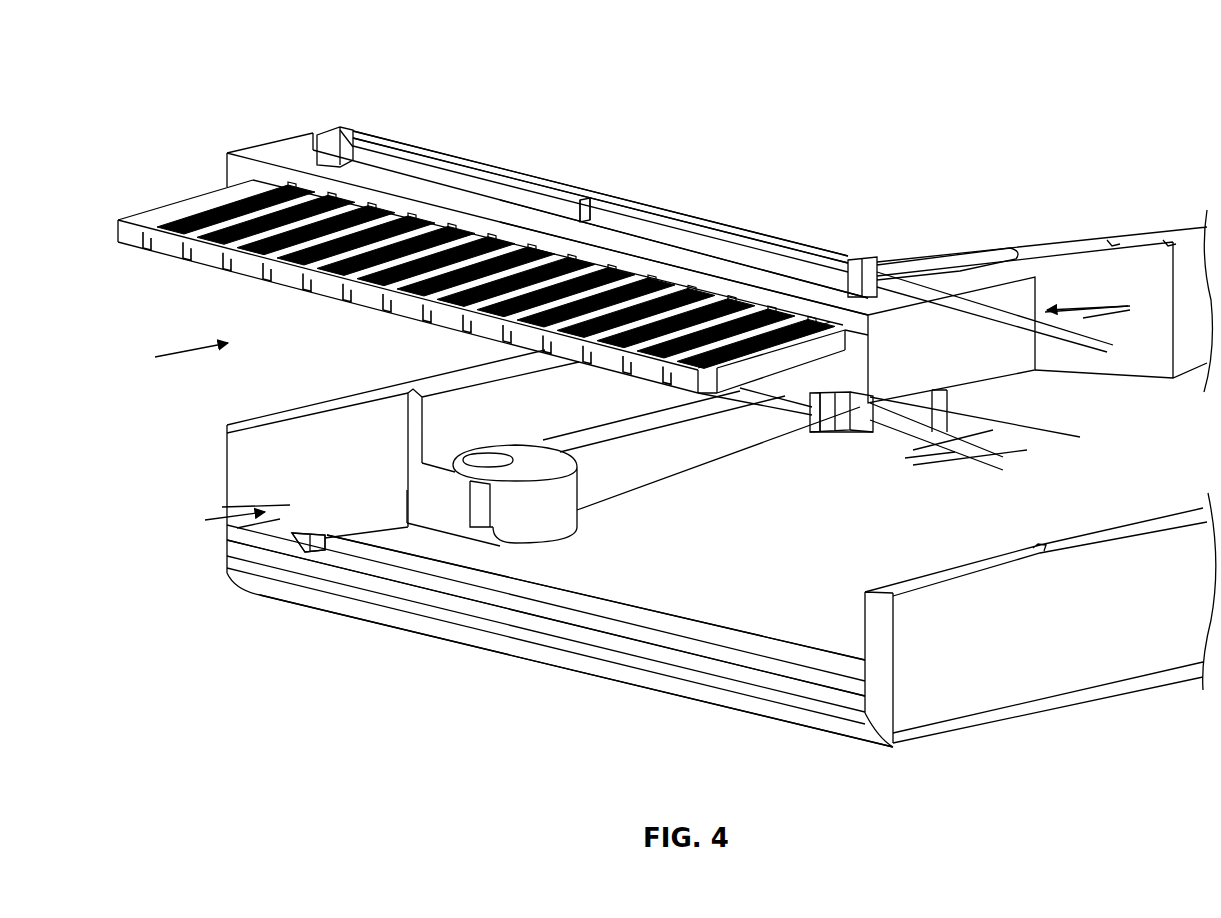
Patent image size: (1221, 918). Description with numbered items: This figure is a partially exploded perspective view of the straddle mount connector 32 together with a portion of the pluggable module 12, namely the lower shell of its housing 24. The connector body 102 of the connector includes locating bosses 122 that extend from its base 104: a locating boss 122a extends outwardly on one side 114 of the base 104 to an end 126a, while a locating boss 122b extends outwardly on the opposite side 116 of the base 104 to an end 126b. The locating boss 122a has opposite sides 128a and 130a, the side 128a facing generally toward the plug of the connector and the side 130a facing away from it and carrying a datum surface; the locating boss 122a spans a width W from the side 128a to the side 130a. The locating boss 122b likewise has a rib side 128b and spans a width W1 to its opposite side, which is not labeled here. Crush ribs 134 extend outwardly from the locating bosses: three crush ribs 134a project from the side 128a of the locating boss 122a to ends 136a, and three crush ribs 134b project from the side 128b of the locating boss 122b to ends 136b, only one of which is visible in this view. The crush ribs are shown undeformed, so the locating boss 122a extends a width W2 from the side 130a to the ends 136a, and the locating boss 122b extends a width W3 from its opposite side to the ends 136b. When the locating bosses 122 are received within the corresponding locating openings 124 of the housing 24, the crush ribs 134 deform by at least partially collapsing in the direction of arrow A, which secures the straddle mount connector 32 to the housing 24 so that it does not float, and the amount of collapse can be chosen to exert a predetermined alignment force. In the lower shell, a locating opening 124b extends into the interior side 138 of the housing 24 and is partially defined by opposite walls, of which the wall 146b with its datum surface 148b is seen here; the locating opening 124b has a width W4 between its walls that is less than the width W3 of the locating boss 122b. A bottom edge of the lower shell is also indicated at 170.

The pluggable module 12 is at (970, 128).
The housing 24 is at (1052, 666).
The straddle mount connector 32 is at (277, 112).
The connector body 102 is at (224, 150).
The base 104 is at (848, 322).
The side 114 is at (740, 273).
The opposite side 116 is at (922, 408).
The locating bosses 122 is at (450, 152).
The locating boss 122a is at (333, 126).
The locating boss 122b is at (824, 434).
The locating openings 124 is at (597, 611).
The locating opening 124b is at (738, 641).
The end 126a is at (504, 162).
The end 126b is at (778, 420).
The side 128a is at (656, 228).
The side 128b is at (737, 398).
The side 130a is at (880, 257).
The crush ribs 134 is at (354, 146).
The crush ribs 134a is at (589, 204).
The crush ribs 134b is at (814, 426).
The ends 136a is at (572, 210).
The ends 136b is at (1033, 323).
The interior side 138 is at (300, 526).
The wall 146b is at (346, 558).
The datum surface 148b is at (452, 587).
The bottom edge 170 is at (776, 707).
The arrow A is at (190, 352).
The width W is at (1117, 312).
The width W1 is at (1012, 438).
The width W2 is at (1082, 303).
The width W3 is at (930, 463).
The width W4 is at (274, 506).